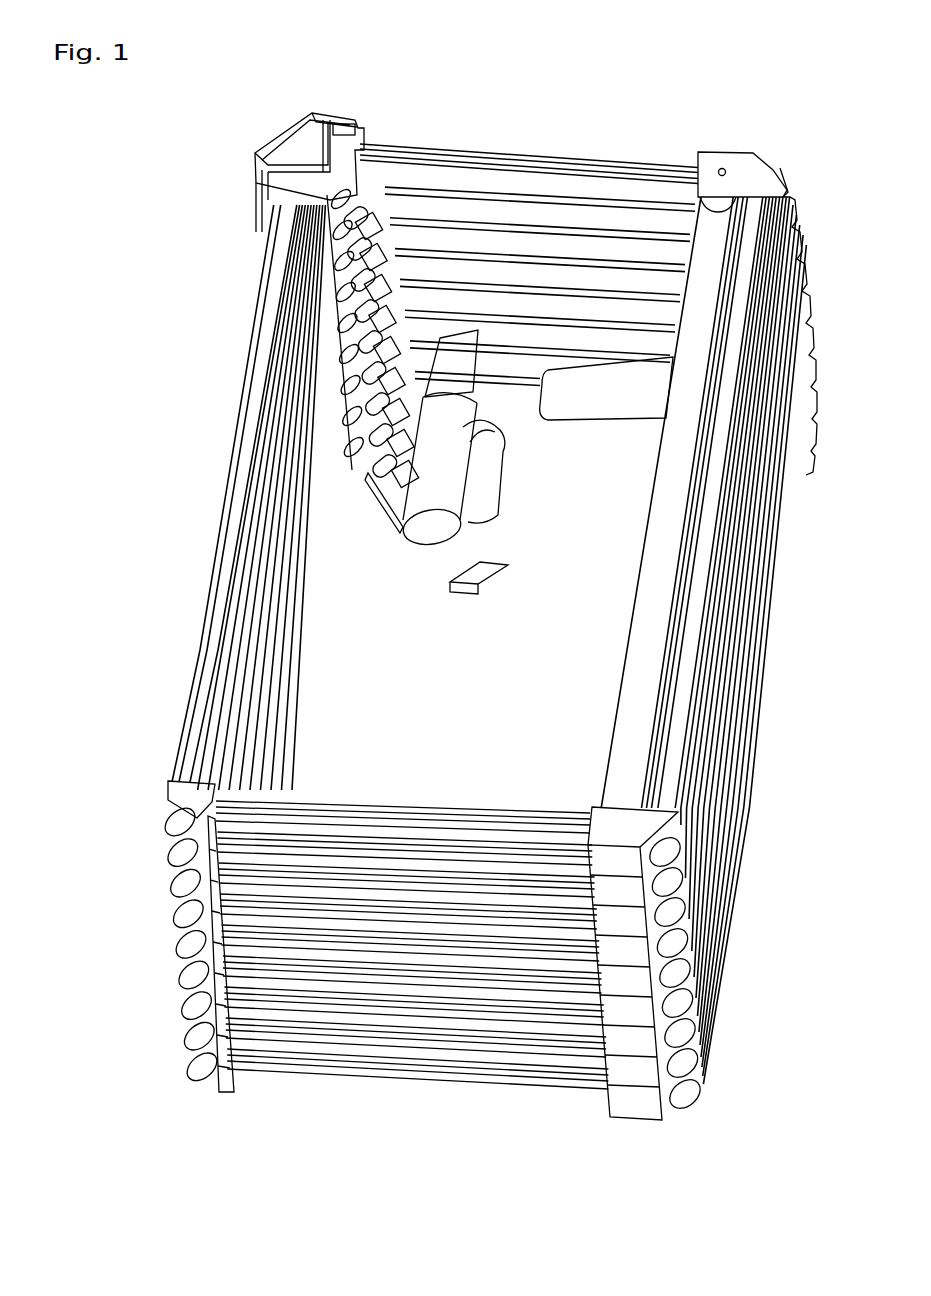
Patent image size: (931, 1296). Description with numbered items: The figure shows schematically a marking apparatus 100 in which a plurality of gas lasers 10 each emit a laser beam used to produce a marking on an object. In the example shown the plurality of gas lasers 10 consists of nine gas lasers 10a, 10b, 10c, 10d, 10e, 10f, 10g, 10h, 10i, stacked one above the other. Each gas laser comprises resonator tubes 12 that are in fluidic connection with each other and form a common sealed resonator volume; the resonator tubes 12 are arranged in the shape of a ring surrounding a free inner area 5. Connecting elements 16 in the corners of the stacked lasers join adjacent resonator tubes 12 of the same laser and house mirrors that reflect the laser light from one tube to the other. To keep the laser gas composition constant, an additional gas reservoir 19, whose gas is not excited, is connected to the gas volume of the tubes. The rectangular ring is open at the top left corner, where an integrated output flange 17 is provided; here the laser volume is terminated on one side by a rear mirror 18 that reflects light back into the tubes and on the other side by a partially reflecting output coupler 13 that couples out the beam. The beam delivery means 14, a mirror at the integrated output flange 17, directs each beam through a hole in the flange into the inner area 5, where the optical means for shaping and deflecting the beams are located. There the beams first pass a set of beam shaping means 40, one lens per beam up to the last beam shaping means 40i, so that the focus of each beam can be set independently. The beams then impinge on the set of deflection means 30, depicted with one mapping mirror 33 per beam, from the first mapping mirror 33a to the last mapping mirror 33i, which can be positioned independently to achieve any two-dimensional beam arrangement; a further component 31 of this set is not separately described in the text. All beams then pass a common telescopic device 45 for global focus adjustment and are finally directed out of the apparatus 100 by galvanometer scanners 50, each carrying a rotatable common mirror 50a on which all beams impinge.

The marking apparatus 100 is at (598, 104).
The inner area 5 is at (477, 627).
The gas lasers 10 is at (315, 958).
The gas laser 10a is at (160, 824).
The gas laser 10b is at (160, 855).
The gas laser 10c is at (170, 885).
The gas laser 10d is at (170, 917).
The gas laser 10e is at (172, 945).
The gas laser 10f is at (172, 975).
The gas laser 10g is at (172, 1006).
The gas laser 10h is at (176, 1037).
The gas laser 10i is at (350, 1068).
The resonator tubes 12 is at (274, 1072).
The output coupler 13 is at (300, 191).
The beam delivery means 14 is at (275, 135).
The connecting elements 16 is at (765, 170).
The integrated output flange 17 is at (275, 125).
The rear mirror 18 is at (350, 124).
The gas reservoir 19 is at (650, 638).
The deflection means 30 is at (321, 321).
The cam 31 is at (370, 210).
The mapping mirror 33 is at (329, 182).
The mapping mirror 33a is at (362, 230).
The mapping mirror 33i is at (396, 465).
The beam shaping means 40 is at (334, 202).
The beam shaping means 40i is at (350, 448).
The telescopic device 45 is at (480, 497).
The galvanometer scanners 50 is at (419, 439).
The rotatable common mirror 50a is at (450, 354).